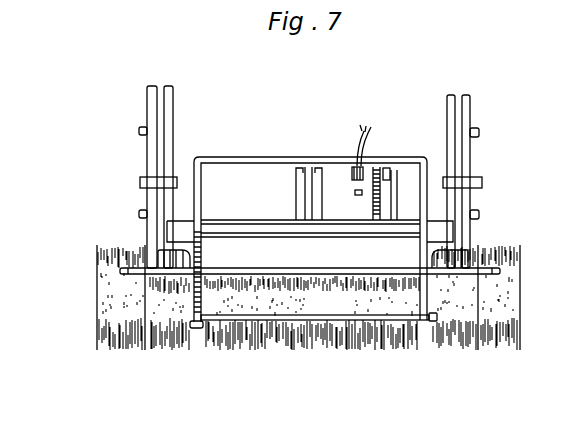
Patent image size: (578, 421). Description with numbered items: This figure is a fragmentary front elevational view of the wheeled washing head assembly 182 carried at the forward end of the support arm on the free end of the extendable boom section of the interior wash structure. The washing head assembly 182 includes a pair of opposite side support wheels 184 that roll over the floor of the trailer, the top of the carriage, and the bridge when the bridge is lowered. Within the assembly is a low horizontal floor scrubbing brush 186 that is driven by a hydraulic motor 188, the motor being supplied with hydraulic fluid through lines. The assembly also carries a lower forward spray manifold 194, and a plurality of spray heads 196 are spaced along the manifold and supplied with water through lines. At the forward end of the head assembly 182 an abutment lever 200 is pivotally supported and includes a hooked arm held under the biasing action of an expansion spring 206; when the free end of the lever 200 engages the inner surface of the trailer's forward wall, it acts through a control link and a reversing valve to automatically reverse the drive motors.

The washing head assembly 182 is at (331, 157).
The support wheels 184 is at (174, 254).
The floor scrubbing brush 186 is at (257, 347).
The hydraulic motor 188 is at (220, 236).
The lower forward spray manifold 194 is at (378, 272).
The spray heads 196 is at (480, 136).
The abutment lever 200 is at (320, 320).
The expansion spring 206 is at (383, 197).